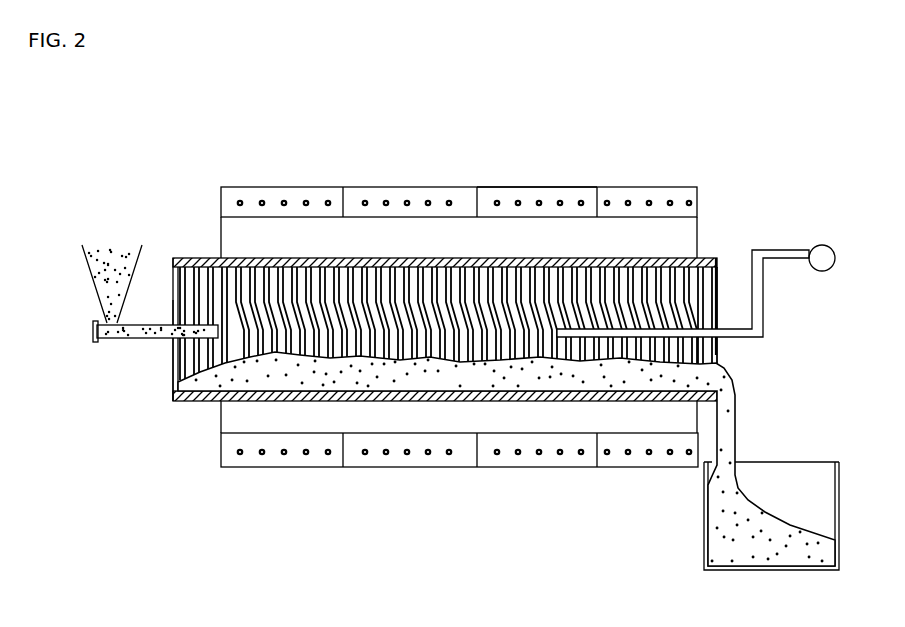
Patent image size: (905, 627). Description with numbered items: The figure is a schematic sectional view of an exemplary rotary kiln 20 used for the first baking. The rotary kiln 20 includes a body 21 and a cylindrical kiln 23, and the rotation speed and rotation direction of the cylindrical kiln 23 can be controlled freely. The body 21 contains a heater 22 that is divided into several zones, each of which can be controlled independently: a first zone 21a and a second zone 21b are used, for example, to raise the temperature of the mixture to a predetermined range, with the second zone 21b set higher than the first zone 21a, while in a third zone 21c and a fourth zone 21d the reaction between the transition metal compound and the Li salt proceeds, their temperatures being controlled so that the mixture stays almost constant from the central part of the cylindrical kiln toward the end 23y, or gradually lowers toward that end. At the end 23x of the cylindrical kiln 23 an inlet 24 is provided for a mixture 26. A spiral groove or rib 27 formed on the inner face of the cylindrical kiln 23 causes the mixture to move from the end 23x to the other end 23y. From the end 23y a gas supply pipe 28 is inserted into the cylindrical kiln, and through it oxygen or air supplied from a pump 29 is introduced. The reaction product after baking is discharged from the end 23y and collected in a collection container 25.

The rotary kiln 20 is at (732, 171).
The body 21 is at (395, 187).
The first zone 21a is at (277, 193).
The second zone 21b is at (448, 195).
The third zone 21c is at (532, 195).
The fourth zone 21d is at (640, 195).
The heater 22 is at (493, 200).
The cylindrical kiln 23 is at (565, 258).
The end of the cylindrical kiln 23x is at (175, 366).
The end of the cylindrical kiln 23y is at (720, 357).
The inlet 24 is at (133, 340).
The collection container 25 is at (838, 479).
The mixture 26 is at (110, 283).
The spiral groove or rib 27 is at (193, 293).
The gas supply pipe 28 is at (745, 336).
The pump 29 is at (822, 245).